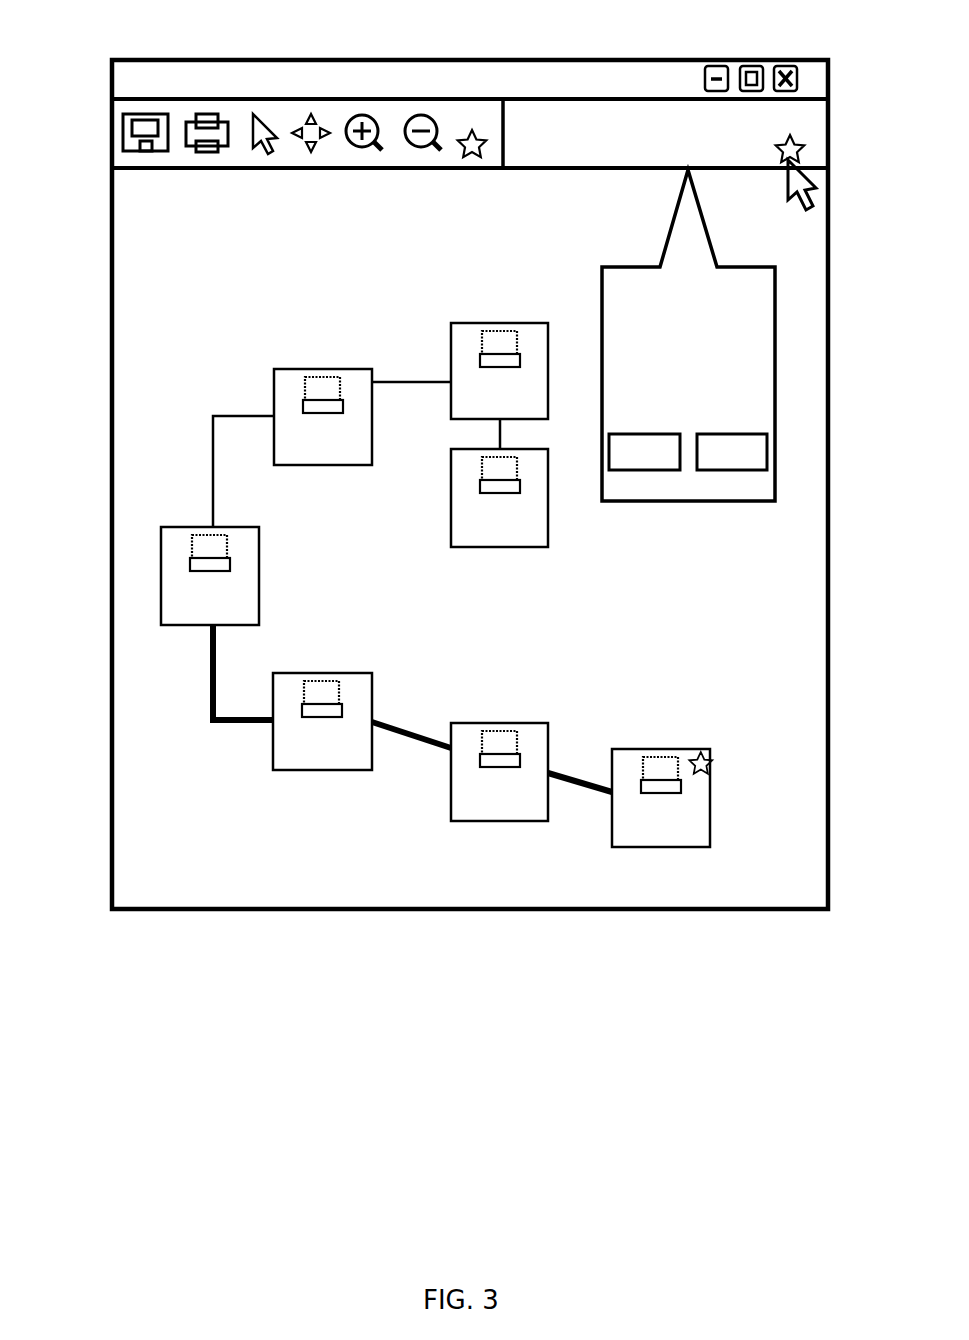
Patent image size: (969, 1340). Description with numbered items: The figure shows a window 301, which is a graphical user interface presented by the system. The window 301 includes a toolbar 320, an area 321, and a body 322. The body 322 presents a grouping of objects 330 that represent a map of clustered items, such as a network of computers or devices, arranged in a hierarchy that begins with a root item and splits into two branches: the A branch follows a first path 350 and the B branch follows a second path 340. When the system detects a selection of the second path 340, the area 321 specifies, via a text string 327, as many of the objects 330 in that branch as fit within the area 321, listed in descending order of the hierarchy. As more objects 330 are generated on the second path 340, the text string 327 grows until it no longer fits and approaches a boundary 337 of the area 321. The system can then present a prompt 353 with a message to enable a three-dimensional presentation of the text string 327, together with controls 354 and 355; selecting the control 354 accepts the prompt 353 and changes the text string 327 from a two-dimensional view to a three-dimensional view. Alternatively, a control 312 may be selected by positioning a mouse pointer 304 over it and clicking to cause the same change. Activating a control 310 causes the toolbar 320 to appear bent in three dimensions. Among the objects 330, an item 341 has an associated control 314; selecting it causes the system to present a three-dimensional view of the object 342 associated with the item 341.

The window 301 is at (240, 60).
The control 310 is at (472, 130).
The boundary 337 is at (830, 120).
The control 312 is at (800, 156).
The toolbar 320 is at (212, 175).
The text string 327 is at (562, 168).
The area 321 is at (650, 170).
The mouse pointer 304 is at (800, 200).
The body 322 is at (112, 330).
The first path 350 is at (222, 414).
The prompt 353 is at (776, 383).
The control 354 is at (648, 472).
The control 355 is at (735, 472).
The second path 340 is at (232, 724).
The item 341 is at (617, 749).
The object 342 is at (655, 758).
The control 314 is at (705, 748).
The objects 330 is at (612, 760).